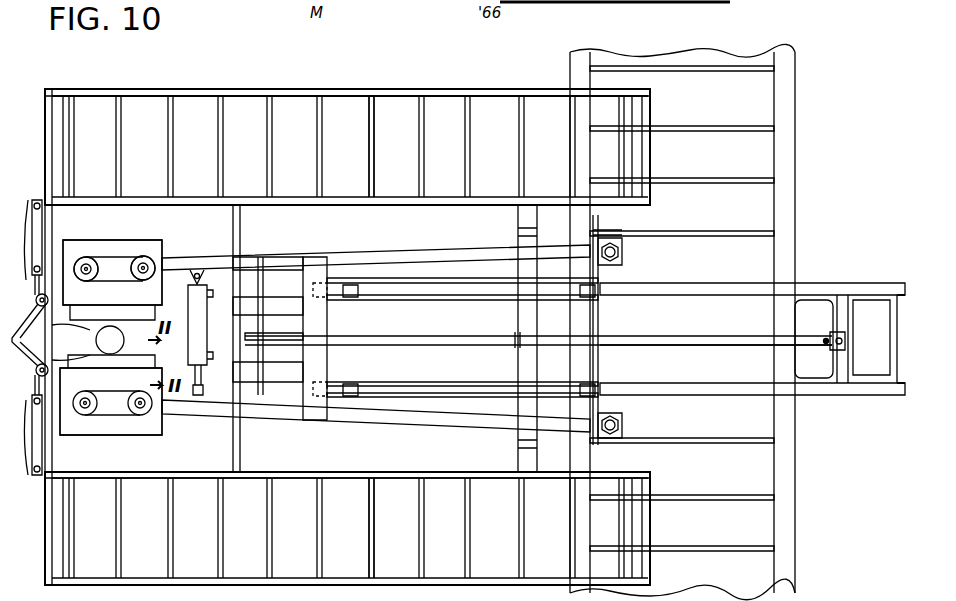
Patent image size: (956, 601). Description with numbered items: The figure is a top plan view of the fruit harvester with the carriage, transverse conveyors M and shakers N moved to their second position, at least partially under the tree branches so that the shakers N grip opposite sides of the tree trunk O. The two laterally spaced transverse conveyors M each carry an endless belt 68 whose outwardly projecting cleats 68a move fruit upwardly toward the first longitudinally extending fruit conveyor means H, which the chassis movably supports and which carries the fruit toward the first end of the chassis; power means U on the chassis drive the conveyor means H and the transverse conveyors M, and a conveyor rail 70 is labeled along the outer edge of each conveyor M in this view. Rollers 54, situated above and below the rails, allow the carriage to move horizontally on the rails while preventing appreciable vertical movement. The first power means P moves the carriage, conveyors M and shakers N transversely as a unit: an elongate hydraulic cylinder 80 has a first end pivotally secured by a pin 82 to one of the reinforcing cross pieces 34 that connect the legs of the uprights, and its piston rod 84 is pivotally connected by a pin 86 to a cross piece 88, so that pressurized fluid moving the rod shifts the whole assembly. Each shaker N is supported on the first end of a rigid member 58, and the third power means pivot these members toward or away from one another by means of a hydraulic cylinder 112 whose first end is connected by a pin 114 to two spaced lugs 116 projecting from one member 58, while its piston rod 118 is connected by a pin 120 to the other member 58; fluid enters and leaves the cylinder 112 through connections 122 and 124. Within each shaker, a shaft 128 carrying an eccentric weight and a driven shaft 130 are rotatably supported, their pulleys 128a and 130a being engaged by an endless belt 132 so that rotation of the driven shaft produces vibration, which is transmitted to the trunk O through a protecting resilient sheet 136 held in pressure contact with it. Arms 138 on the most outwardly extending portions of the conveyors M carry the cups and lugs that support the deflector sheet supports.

The reinforcing cross pieces 34 is at (893, 356).
The rollers 54 is at (350, 290).
The rigid member 58 is at (372, 262).
The endless belt 68 is at (352, 143).
The cleats 68a is at (370, 160).
The rail 70 is at (652, 100).
The hydraulic cylinder 80 is at (690, 345).
The pin 82 is at (838, 336).
The piston rod 84 is at (421, 337).
The pin 86 is at (255, 320).
The cross piece 88 is at (235, 318).
The hydraulic cylinder 112 is at (150, 385).
The pin 114 is at (204, 265).
The lugs 116 is at (197, 278).
The piston rod 118 is at (212, 380).
The pin 120 is at (190, 396).
The connection 122 is at (238, 282).
The connection 124 is at (216, 352).
The shaft 128 is at (86, 258).
The pulley 128a is at (85, 279).
The shaft 130 is at (148, 258).
The pulley 130a is at (139, 279).
The endless belt 132 is at (118, 258).
The protecting resilient sheet 136 is at (72, 356).
The arms 138 is at (78, 200).
The first longitudinally extending fruit conveyor means H is at (724, 477).
The transverse endless belt conveyors M is at (290, 600).
The power driven shakers N is at (122, 200).
The tree trunk O is at (120, 346).
The first power means P is at (660, 337).
The power means U is at (22, 200).